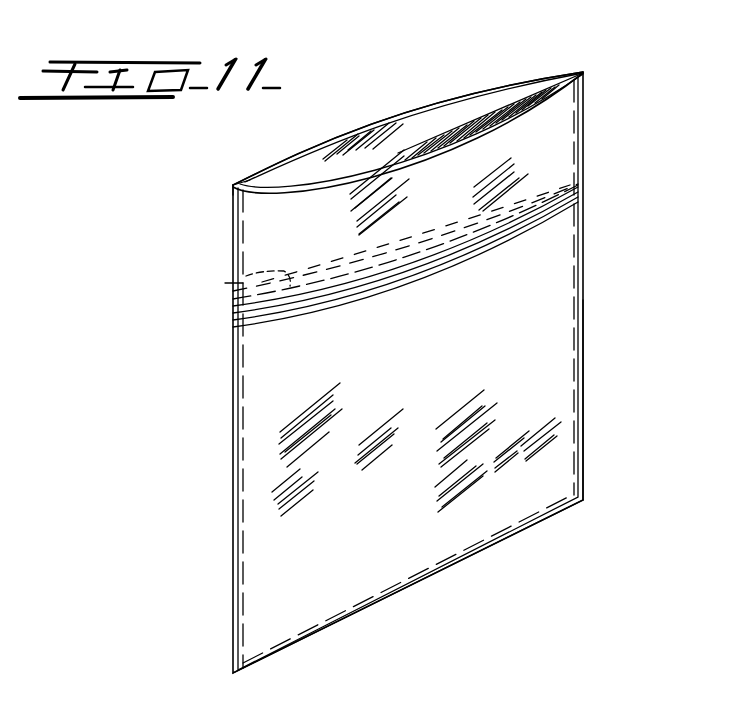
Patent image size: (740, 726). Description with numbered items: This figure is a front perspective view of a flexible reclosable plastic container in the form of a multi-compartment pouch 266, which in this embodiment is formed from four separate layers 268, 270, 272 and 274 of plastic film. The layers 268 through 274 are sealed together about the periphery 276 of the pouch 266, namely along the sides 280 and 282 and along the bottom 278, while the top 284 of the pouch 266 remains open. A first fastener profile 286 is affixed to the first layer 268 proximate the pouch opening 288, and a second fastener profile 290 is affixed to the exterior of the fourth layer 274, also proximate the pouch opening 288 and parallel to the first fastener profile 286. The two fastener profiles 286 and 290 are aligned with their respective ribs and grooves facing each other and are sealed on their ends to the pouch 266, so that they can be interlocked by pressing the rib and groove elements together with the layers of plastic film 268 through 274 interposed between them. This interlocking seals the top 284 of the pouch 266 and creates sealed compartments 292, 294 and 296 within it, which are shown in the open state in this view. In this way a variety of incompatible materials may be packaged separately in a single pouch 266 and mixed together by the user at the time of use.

The multi-compartment pouch 266 is at (591, 297).
The first layer of plastic film 268 is at (553, 242).
The second layer of plastic film 270 is at (530, 95).
The third layer of plastic film 272 is at (473, 97).
The fourth layer of plastic film 274 is at (375, 118).
The periphery 276 is at (197, 469).
The bottom 278 is at (457, 566).
The side 280 is at (233, 525).
The side 282 is at (586, 407).
The top 284 is at (258, 170).
The first fastener profile 286 is at (405, 283).
The pouch opening 288 is at (303, 168).
The second fastener profile 290 is at (222, 285).
The compartment 292 is at (474, 121).
The compartment 294 is at (415, 126).
The compartment 296 is at (358, 126).